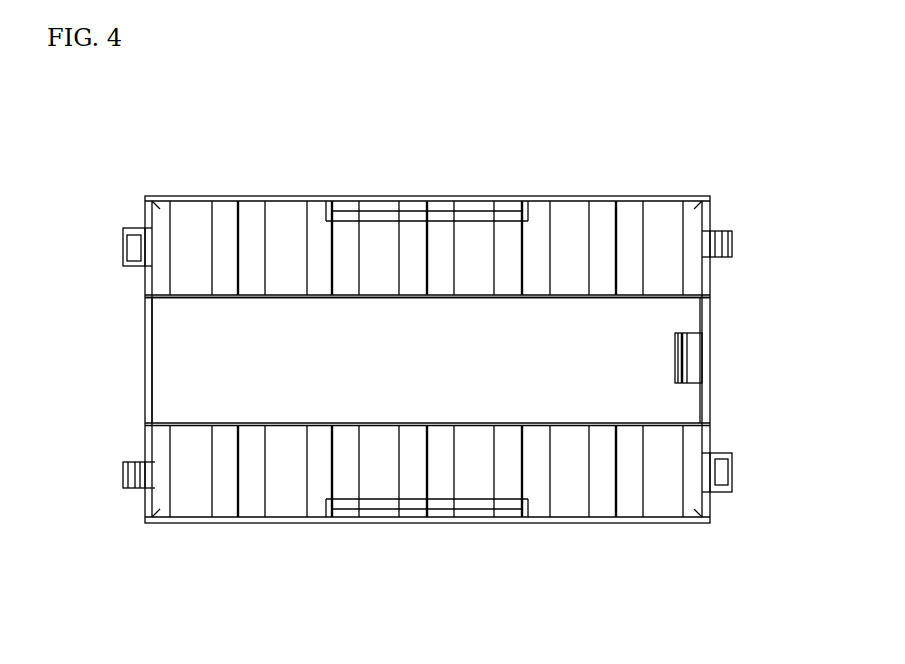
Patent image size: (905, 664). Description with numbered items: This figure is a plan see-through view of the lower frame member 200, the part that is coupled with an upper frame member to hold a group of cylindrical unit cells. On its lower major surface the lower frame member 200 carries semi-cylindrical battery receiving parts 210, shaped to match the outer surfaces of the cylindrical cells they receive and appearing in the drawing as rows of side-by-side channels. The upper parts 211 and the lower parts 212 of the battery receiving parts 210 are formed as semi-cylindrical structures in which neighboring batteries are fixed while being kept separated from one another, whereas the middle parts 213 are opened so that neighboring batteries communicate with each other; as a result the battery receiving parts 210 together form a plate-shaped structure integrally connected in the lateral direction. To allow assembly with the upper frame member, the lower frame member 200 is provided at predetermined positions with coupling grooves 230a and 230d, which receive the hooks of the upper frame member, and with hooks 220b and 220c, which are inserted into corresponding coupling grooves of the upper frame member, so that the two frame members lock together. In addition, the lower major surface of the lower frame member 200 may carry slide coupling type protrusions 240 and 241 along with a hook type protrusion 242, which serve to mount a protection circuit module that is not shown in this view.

The lower frame member 200 is at (82, 107).
The battery receiving parts 210 is at (480, 291).
The upper parts 211 is at (107, 203).
The lower parts 212 is at (107, 310).
The middle parts 213 is at (107, 430).
The hook 220b is at (733, 243).
The hook 220c is at (133, 462).
The coupling groove 230a is at (136, 228).
The coupling groove 230d is at (733, 465).
The slide coupling type protrusion 240 is at (405, 203).
The slide coupling type protrusion 241 is at (440, 513).
The hook type protrusion 242 is at (693, 355).